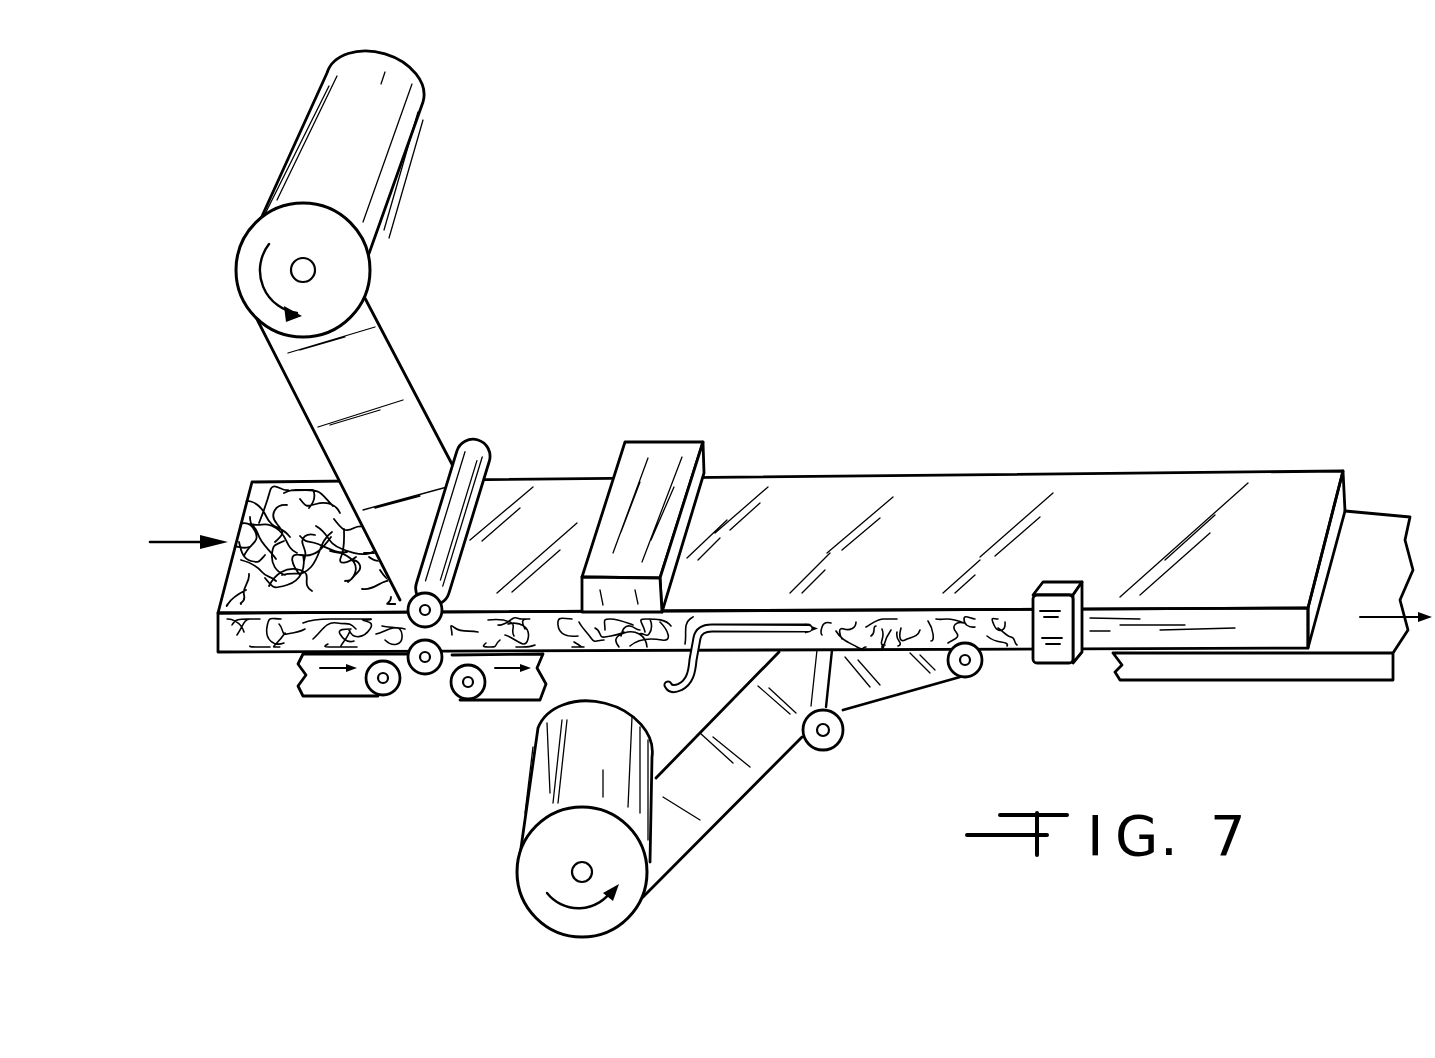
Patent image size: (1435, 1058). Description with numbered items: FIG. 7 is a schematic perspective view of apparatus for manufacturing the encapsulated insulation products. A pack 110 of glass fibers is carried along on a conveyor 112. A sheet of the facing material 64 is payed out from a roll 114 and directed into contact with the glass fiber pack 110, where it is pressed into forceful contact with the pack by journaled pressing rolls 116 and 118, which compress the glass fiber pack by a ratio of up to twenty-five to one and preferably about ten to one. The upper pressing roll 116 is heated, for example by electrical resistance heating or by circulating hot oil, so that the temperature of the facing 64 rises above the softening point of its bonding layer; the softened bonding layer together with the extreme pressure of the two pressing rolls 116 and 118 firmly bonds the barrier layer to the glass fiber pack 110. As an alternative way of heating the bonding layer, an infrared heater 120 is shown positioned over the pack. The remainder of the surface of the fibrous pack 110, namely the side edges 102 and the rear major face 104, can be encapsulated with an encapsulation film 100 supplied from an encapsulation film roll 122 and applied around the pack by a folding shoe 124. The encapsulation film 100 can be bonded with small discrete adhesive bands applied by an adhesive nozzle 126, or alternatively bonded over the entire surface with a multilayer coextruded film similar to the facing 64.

The facing material 64 is at (386, 338).
The encapsulation film 100 is at (737, 803).
The side edges 102 is at (903, 633).
The rear major face 104 is at (237, 655).
The pack of glass fibers 110 is at (212, 627).
The conveyor 112 is at (314, 700).
The roll 114 is at (420, 140).
The upper pressing roll 116 is at (487, 442).
The pressing roll 118 is at (419, 675).
The infrared heater 120 is at (672, 442).
The encapsulation film roll 122 is at (521, 882).
The folding shoe 124 is at (1057, 664).
The adhesive nozzle 126 is at (752, 612).